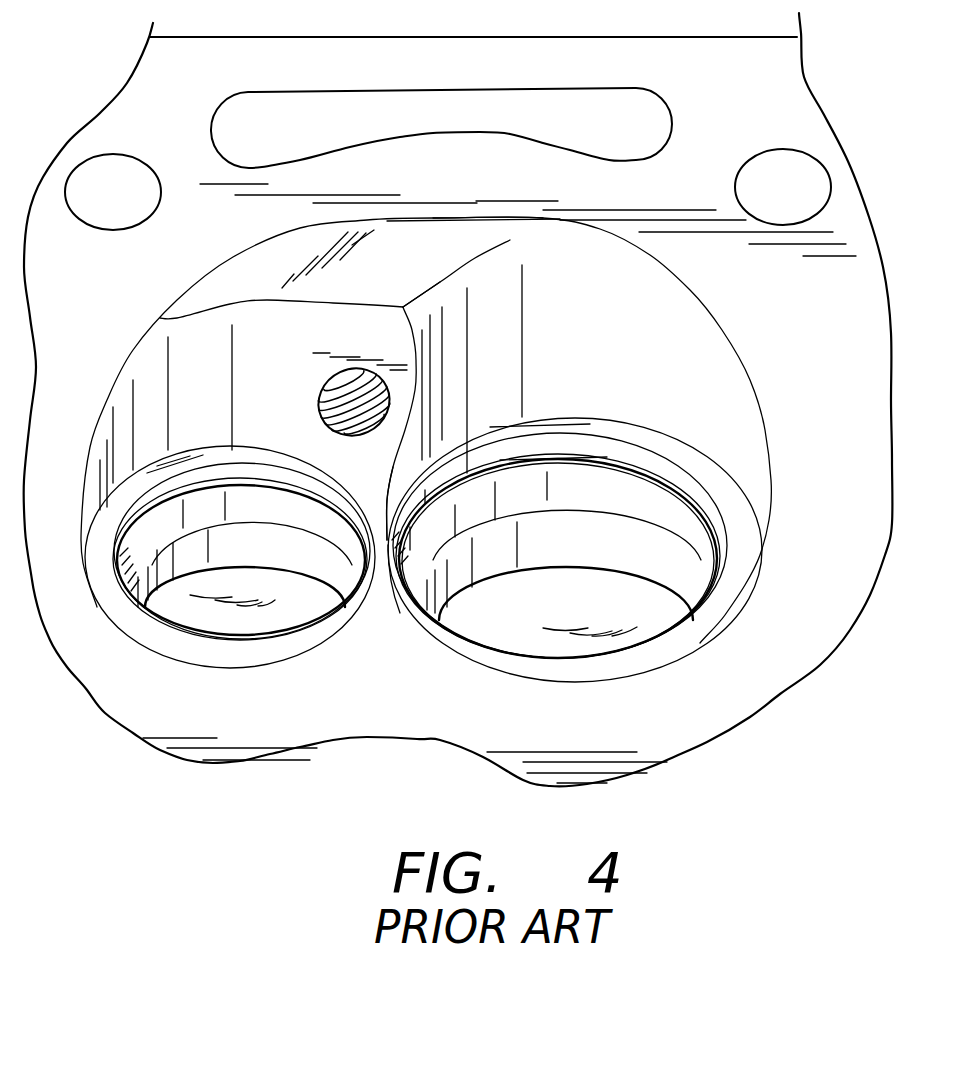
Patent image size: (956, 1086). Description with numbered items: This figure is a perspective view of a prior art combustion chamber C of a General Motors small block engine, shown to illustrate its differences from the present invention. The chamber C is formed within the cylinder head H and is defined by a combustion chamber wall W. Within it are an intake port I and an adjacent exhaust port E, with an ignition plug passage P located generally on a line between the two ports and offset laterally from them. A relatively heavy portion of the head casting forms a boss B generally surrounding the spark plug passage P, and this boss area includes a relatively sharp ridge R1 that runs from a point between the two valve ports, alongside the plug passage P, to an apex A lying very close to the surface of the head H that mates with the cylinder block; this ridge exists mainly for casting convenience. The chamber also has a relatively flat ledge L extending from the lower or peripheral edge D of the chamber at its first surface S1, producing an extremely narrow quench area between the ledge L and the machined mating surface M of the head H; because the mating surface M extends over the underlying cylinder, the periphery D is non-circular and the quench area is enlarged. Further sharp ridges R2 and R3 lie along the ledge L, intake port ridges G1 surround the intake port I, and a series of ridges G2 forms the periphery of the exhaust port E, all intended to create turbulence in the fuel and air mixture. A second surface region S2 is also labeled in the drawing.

The cylinder head H is at (749, 713).
The combustion chamber C is at (749, 353).
The mating surface M is at (431, 173).
The peripheral edge D is at (397, 222).
The first surface S1 is at (563, 280).
The squish area between valve seats S2 is at (380, 580).
The ridge R2 is at (265, 303).
The ridge R3 is at (463, 257).
The ridge R1 is at (416, 372).
The apex A is at (400, 302).
The ledge L is at (348, 293).
The boss B is at (385, 350).
The combustion chamber wall W is at (153, 393).
The ignition plug passage P is at (320, 410).
The intake port ridges G1 is at (693, 458).
The exhaust port ridges G2 is at (245, 465).
The exhaust port E is at (230, 637).
The intake port I is at (573, 660).